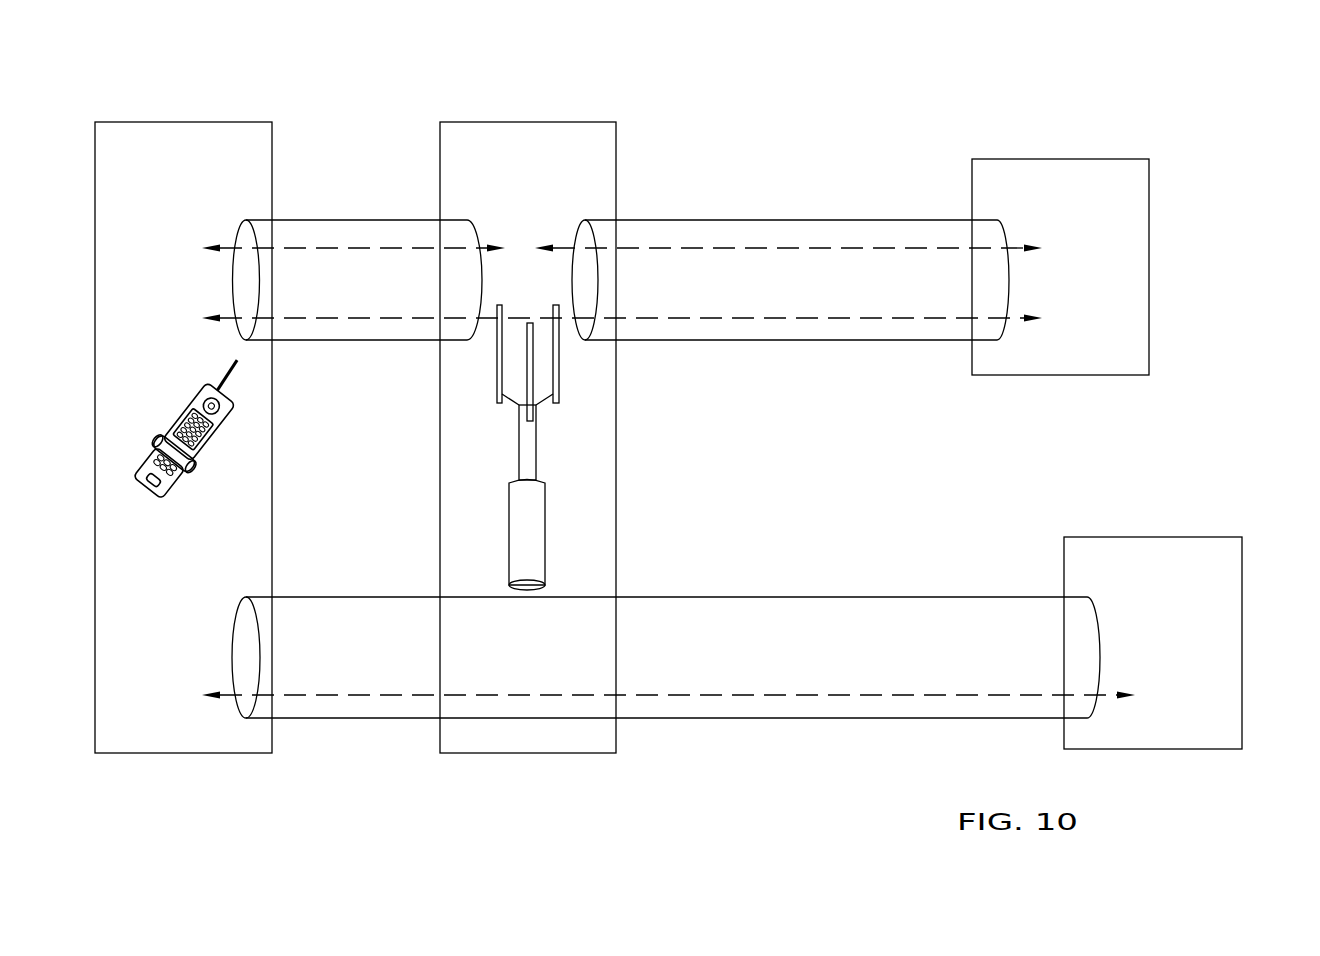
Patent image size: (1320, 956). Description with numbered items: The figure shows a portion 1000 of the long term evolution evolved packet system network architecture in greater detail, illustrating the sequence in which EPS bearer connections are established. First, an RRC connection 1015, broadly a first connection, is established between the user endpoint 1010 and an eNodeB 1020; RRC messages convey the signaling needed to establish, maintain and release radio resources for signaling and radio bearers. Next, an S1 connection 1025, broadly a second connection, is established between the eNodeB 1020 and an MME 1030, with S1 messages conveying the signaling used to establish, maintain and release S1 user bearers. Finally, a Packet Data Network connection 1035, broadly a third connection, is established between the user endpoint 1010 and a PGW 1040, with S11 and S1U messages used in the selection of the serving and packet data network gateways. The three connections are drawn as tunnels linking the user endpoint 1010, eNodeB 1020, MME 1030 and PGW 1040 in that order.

The portion of the long term evolution evolved packet system network architecture 1000 is at (1316, 106).
The user endpoint 1010 is at (215, 557).
The RRC connection 1015 is at (345, 220).
The eNodeB 1020 is at (555, 187).
The S1 connection 1025 is at (665, 220).
The MME 1030 is at (1085, 207).
The Packet Data Network (PDN) connection 1035 is at (663, 597).
The PGW 1040 is at (1176, 583).